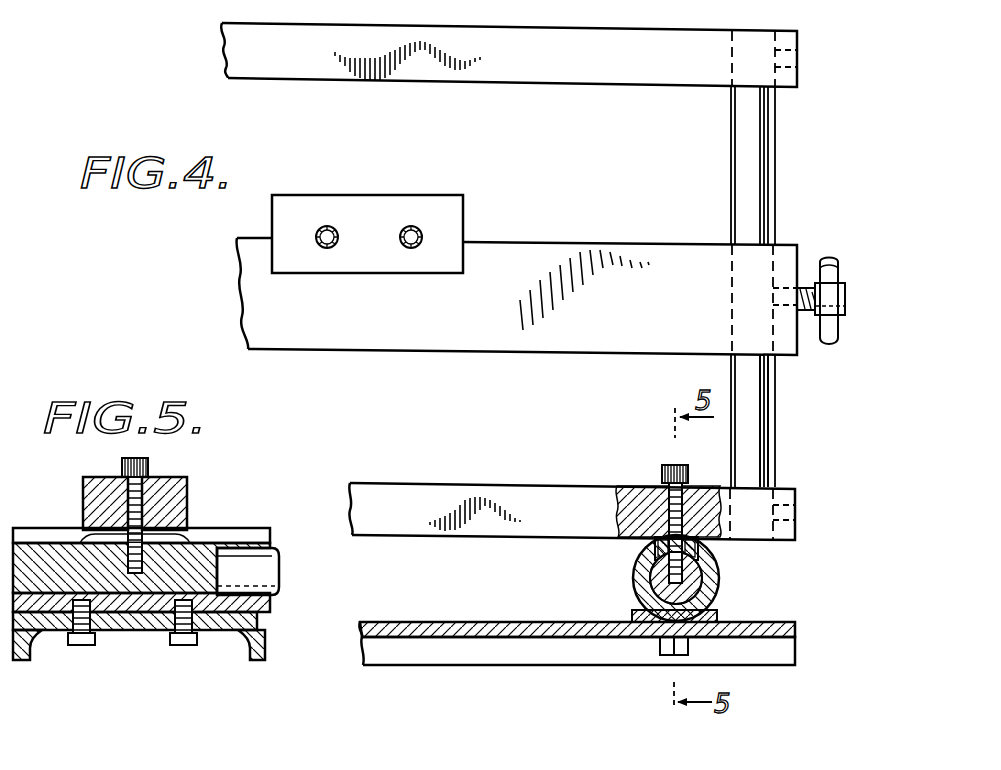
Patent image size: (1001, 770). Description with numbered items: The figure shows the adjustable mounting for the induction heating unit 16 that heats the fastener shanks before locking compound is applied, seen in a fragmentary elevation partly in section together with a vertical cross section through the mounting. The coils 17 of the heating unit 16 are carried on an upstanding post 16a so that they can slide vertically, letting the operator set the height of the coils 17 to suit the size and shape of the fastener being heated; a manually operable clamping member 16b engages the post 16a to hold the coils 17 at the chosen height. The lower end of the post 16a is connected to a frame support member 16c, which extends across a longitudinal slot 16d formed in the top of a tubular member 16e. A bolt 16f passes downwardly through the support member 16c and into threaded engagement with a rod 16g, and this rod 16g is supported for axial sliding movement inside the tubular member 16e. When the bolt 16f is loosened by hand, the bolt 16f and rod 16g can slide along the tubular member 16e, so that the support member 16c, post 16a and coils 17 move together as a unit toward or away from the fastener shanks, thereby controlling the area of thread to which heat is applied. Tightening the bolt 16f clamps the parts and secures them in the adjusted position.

In FIG. 4, the induction heating unit 16 is at (778, 150).
In FIG. 4, the upstanding post 16a is at (769, 393).
In FIG. 4, the manually operable clamping member 16b is at (840, 278).
In FIG. 4, the frame support member 16c is at (543, 482).
In FIG. 5, the frame support member 16c is at (90, 500).
In FIG. 4, the longitudinal slot 16d is at (692, 555).
In FIG. 5, the longitudinal slot 16d is at (240, 540).
In FIG. 4, the tubular member 16e is at (671, 578).
In FIG. 5, the tubular member 16e is at (265, 605).
In FIG. 4, the bolt 16f is at (638, 565).
In FIG. 5, the bolt 16f is at (150, 467).
In FIG. 4, the rod 16g is at (648, 583).
In FIG. 5, the rod 16g is at (157, 585).
In FIG. 4, the coils 17 is at (414, 226).